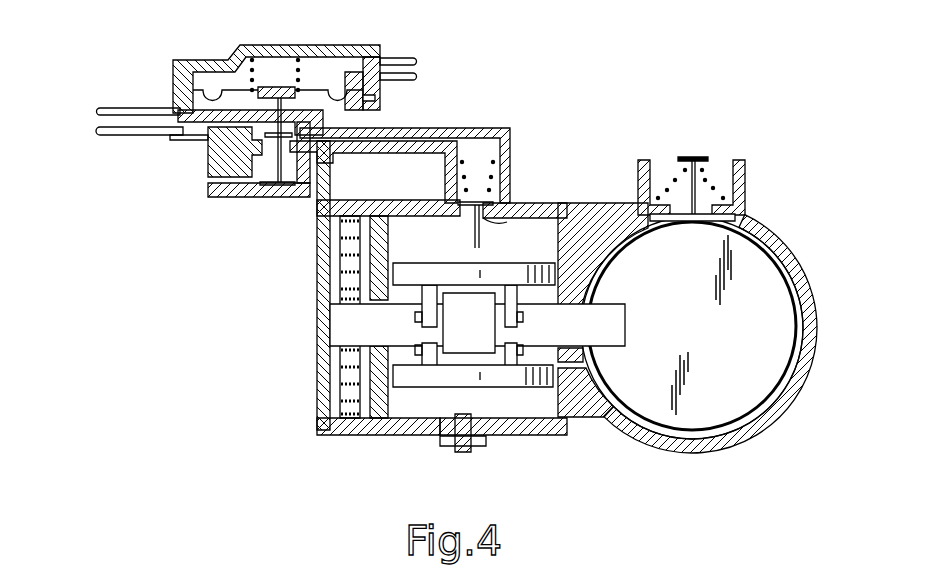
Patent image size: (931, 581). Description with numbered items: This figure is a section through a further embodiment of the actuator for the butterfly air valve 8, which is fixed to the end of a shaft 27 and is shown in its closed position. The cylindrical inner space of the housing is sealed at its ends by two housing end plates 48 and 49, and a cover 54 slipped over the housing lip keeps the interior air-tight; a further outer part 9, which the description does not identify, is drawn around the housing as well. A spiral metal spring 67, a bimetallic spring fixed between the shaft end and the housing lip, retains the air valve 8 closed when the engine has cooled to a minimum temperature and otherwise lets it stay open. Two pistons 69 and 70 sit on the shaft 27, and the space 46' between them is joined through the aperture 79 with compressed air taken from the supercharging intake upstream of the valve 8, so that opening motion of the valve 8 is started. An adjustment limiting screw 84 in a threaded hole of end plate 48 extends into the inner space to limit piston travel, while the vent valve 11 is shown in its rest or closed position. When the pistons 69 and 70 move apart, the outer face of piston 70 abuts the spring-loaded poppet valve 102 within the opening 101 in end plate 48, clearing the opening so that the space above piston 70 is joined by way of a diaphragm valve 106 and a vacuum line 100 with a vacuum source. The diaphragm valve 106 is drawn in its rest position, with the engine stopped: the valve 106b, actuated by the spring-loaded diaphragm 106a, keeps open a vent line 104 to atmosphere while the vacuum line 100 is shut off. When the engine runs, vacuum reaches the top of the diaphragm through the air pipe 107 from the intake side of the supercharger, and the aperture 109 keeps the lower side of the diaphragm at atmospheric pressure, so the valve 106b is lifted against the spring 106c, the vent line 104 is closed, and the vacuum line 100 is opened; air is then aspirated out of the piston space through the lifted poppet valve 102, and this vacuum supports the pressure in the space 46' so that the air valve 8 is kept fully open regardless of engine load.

The butterfly air valve 8 is at (738, 395).
The housing shell 9 is at (765, 237).
The vent valve 11 is at (708, 180).
The shaft 27 is at (367, 317).
The space between the pistons 46' is at (338, 377).
The housing end plate 48 is at (572, 212).
The housing end plate 49 is at (530, 427).
The cover 54 is at (348, 425).
The spiral metal spring 67 is at (343, 398).
The piston 69 is at (410, 378).
The piston 70 is at (407, 271).
The bore 79 is at (587, 425).
The adjustment limiting screw 84 is at (455, 447).
The vacuum line 100 is at (120, 122).
The opening 101 is at (497, 203).
The spring-loaded poppet valve 102 is at (480, 230).
The vent line 104 is at (213, 180).
The diaphragm valve 106 is at (271, 80).
The spring-loaded diaphragm 106a is at (225, 92).
The valve 106b is at (305, 98).
The spring 106c is at (288, 62).
The air pipe 107 is at (410, 68).
The aperture 109 is at (378, 106).